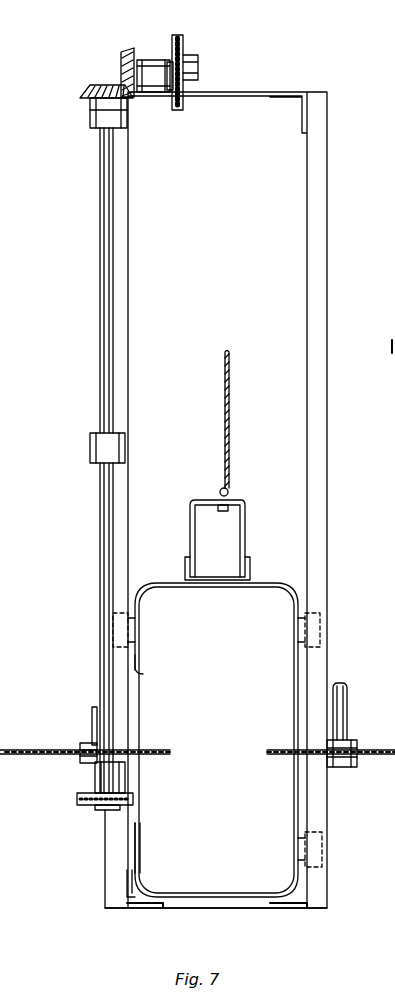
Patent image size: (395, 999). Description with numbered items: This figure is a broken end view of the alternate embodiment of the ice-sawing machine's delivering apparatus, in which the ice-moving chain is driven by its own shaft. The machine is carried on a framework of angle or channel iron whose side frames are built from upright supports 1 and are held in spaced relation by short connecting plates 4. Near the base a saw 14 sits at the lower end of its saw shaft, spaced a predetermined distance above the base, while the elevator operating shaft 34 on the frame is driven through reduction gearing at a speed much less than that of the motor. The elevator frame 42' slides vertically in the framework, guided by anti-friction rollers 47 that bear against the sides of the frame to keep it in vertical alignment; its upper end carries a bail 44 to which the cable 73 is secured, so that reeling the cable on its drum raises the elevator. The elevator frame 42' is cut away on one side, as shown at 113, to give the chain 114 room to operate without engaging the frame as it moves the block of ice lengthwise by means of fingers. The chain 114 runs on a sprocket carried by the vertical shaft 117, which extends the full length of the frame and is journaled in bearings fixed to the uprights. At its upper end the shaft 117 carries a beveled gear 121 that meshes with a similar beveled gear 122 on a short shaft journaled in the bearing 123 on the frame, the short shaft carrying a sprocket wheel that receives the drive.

The upright supports 1 is at (327, 416).
The connecting plates 4 is at (237, 900).
The saw 14 is at (168, 752).
The elevator operating shaft 34 is at (200, 66).
The elevator frame 42' is at (212, 724).
The bail 44 is at (247, 518).
The anti-friction rollers 47 is at (322, 620).
The cable 73 is at (232, 449).
The cut-away 113 is at (143, 671).
The chain 114 is at (72, 803).
The vertical shaft 117 is at (100, 660).
The beveled gear 121 is at (86, 97).
The beveled gear 122 is at (118, 64).
The bearing 123 is at (151, 58).